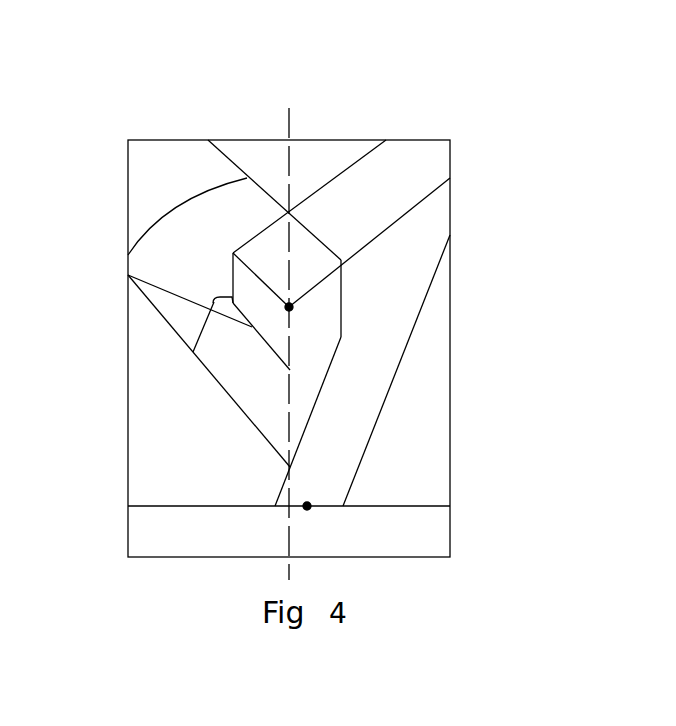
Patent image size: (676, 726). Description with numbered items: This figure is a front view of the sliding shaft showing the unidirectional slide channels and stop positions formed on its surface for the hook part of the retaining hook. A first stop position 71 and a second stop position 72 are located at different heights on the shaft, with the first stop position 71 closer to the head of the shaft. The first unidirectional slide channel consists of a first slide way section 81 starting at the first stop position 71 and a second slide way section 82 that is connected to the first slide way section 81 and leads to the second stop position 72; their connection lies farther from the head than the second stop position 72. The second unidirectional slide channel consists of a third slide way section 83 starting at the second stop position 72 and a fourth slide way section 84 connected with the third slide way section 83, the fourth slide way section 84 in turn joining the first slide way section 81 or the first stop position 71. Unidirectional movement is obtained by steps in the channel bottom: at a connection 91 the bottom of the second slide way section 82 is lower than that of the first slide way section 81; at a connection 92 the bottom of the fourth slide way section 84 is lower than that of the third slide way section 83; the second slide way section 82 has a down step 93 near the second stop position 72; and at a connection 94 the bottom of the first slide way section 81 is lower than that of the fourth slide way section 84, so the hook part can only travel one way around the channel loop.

The first stop position 71 is at (344, 542).
The second stop position 72 is at (427, 395).
The first slide way section 81 is at (464, 370).
The second slide way section 82 is at (309, 139).
The third slide way section 83 is at (254, 147).
The fourth slide way section 84 is at (166, 330).
The connection 91 is at (369, 158).
The connection 92 is at (186, 192).
The down step 93 is at (207, 351).
The connection 94 is at (421, 436).